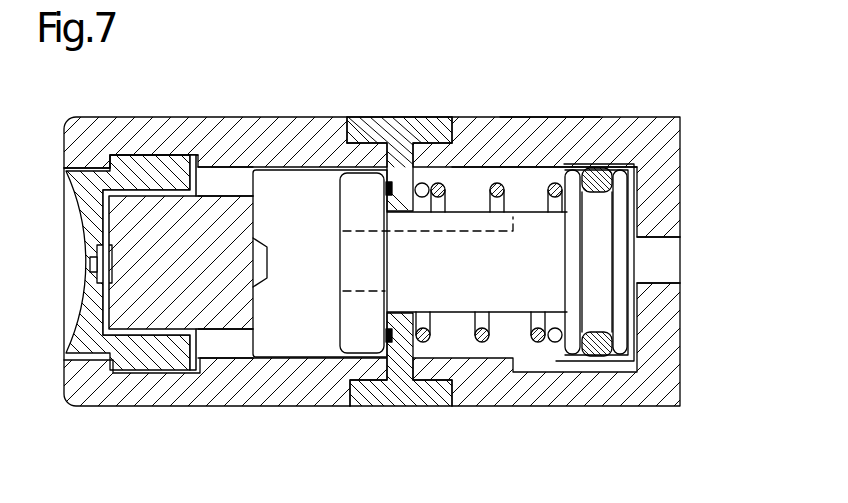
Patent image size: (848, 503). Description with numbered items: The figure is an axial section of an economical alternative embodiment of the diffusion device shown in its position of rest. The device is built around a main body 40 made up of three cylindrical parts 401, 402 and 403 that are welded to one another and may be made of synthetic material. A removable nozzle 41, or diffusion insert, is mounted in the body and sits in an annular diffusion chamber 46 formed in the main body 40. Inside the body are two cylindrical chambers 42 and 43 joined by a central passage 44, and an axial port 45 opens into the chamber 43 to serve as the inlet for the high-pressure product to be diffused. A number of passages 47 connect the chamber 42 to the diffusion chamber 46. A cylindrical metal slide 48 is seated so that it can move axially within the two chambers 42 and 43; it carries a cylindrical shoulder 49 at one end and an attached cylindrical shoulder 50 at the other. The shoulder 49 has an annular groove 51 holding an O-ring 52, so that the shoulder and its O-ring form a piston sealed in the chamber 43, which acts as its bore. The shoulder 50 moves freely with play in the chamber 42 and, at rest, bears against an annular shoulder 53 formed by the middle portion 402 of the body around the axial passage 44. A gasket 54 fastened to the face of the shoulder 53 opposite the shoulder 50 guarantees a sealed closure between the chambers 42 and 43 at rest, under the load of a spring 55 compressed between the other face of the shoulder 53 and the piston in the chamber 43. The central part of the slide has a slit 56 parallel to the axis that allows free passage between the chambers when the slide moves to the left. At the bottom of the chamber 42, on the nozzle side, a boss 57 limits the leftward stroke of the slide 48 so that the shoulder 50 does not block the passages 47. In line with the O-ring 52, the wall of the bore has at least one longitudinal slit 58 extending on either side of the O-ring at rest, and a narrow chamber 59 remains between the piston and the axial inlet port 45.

The main body 40 is at (223, 115).
The cylindrical part 401 is at (165, 128).
The cylindrical part 402 is at (373, 128).
The cylindrical part 403 is at (490, 126).
The removable nozzle 41 is at (128, 165).
The cylindrical chamber 42 is at (285, 330).
The cylindrical chamber 43 is at (532, 348).
The central passage 44 is at (415, 327).
The axial port 45 is at (667, 263).
The annular diffusion chamber 46 is at (198, 363).
The passages 47 is at (246, 184).
The cylindrical slide 48 is at (512, 293).
The cylindrical shoulder 49 is at (607, 355).
The attached cylindrical shoulder 50 is at (349, 335).
The annular groove 51 is at (620, 313).
The O-ring 52 is at (591, 170).
The annular shoulder 53 is at (398, 186).
The gasket 54 is at (392, 328).
The spring 55 is at (485, 345).
The slit 56 is at (518, 122).
The boss 57 is at (260, 278).
The longitudinal slit 58 is at (595, 320).
The narrow chamber 59 is at (628, 198).